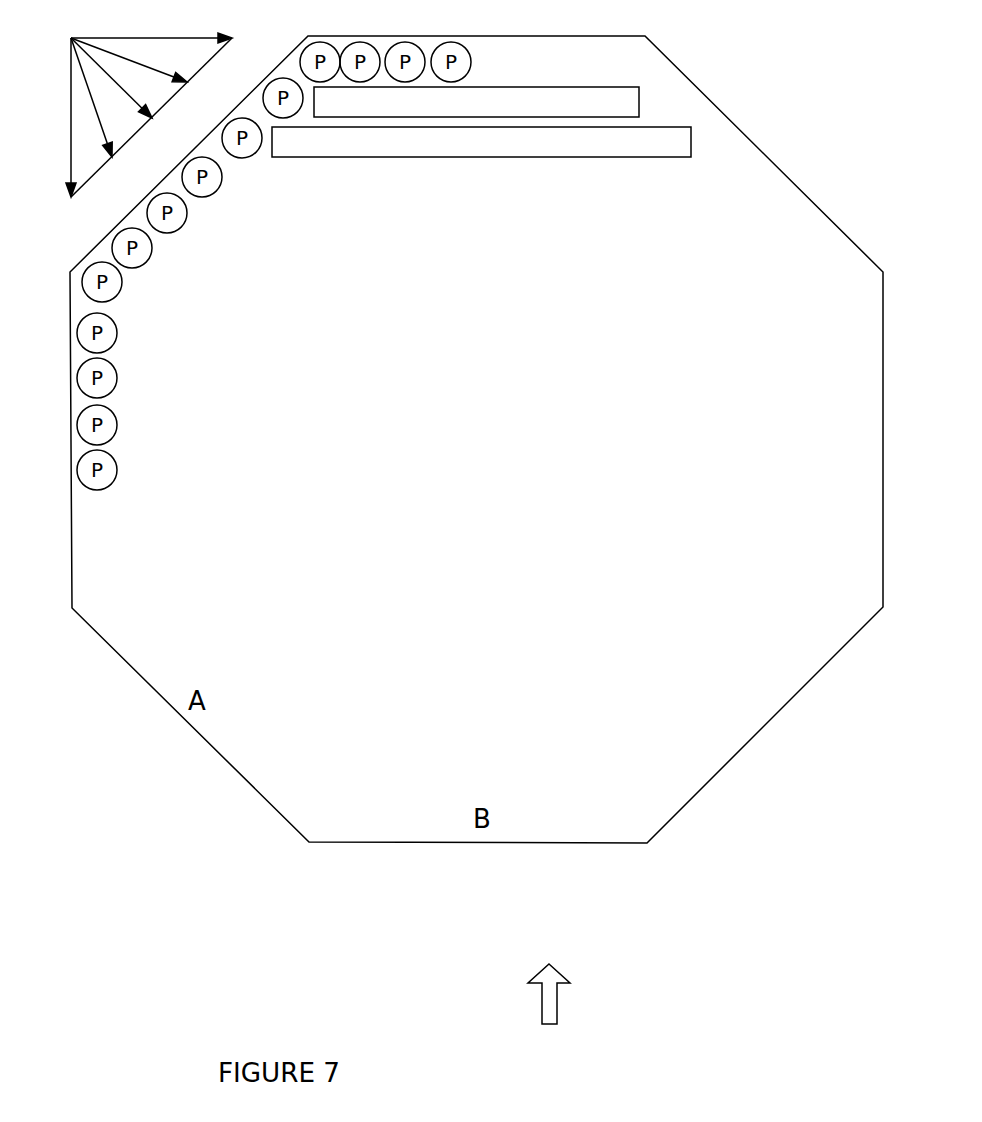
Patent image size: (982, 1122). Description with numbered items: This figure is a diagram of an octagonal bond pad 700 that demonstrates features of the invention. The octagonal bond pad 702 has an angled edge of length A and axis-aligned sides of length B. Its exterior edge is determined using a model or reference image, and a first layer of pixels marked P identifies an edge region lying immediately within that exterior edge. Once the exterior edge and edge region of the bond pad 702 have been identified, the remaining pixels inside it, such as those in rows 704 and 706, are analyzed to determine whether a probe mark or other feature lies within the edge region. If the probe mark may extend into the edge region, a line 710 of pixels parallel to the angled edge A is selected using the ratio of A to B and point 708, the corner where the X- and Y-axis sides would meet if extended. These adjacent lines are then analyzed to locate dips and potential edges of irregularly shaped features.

The octagonal bond pad 700 is at (520, 994).
The octagonal bond pad 702 is at (476, 439).
The row of pixels 704 is at (476, 102).
The row of pixels 706 is at (481, 142).
The point 708 is at (149, 105).
The line of pixels 710 is at (126, 139).